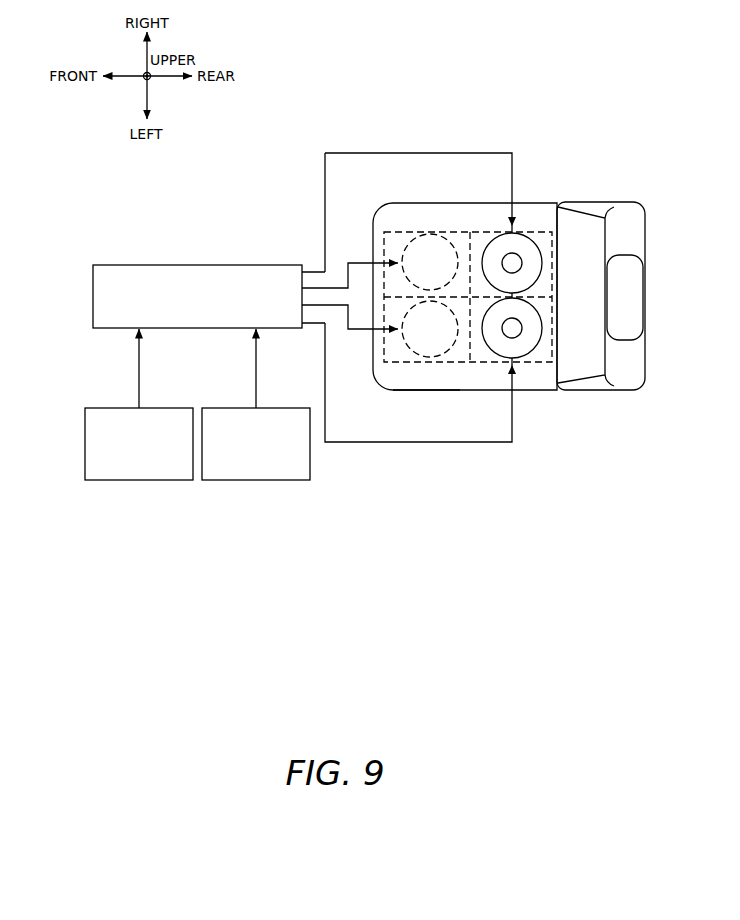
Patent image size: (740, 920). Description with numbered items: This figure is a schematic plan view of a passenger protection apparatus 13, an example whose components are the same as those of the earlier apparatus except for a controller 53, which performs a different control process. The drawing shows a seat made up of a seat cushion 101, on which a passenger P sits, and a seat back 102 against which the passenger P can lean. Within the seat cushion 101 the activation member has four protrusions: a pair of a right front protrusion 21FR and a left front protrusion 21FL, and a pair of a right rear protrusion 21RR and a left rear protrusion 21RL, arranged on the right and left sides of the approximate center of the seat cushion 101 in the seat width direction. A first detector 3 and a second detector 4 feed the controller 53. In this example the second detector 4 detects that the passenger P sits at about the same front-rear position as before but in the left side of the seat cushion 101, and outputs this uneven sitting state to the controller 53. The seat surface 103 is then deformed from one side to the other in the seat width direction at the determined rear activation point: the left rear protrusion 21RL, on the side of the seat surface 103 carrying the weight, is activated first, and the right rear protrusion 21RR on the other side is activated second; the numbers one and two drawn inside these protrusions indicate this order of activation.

The passenger protection apparatus 13 is at (296, 217).
The controller 53 is at (172, 265).
The first detector 3 is at (135, 482).
The second detector 4 is at (270, 482).
The seat cushion 101 is at (378, 203).
The seat back 102 is at (590, 202).
The seat surface 103 is at (377, 376).
The left front protrusion 21FL is at (437, 232).
The right front protrusion 21FR is at (420, 365).
The left rear protrusion 21RL is at (532, 229).
The right rear protrusion 21RR is at (483, 365).
The passenger P is at (531, 362).